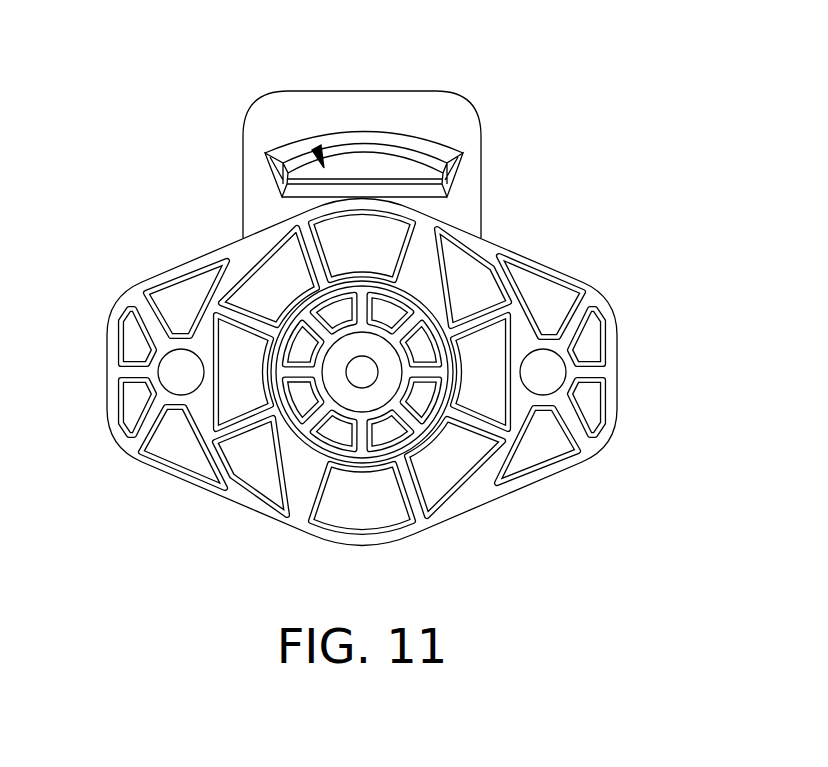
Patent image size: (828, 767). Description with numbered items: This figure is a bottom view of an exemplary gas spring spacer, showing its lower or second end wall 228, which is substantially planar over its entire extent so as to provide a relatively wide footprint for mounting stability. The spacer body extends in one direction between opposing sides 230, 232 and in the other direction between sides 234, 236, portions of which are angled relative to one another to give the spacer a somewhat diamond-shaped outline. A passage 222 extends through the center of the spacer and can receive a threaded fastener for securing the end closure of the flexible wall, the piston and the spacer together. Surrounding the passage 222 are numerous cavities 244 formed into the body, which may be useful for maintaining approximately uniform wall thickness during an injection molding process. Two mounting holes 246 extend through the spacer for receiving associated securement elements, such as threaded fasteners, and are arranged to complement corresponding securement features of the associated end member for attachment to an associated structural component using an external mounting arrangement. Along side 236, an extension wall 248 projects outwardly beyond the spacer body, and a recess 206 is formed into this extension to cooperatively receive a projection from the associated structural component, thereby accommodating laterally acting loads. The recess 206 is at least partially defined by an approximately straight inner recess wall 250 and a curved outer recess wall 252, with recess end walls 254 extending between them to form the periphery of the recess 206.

The recess 206 is at (317, 148).
The passage 222 is at (378, 372).
The second end wall 228 is at (362, 390).
The side 230 is at (620, 364).
The side 232 is at (105, 363).
The side 234 is at (398, 545).
The side 236 is at (275, 265).
The cavities 244 is at (270, 270).
The mounting holes 246 is at (545, 348).
The extension wall 248 is at (455, 118).
The inner recess wall 250 is at (414, 181).
The outer recess wall 252 is at (336, 156).
The recess end walls 254 is at (364, 112).